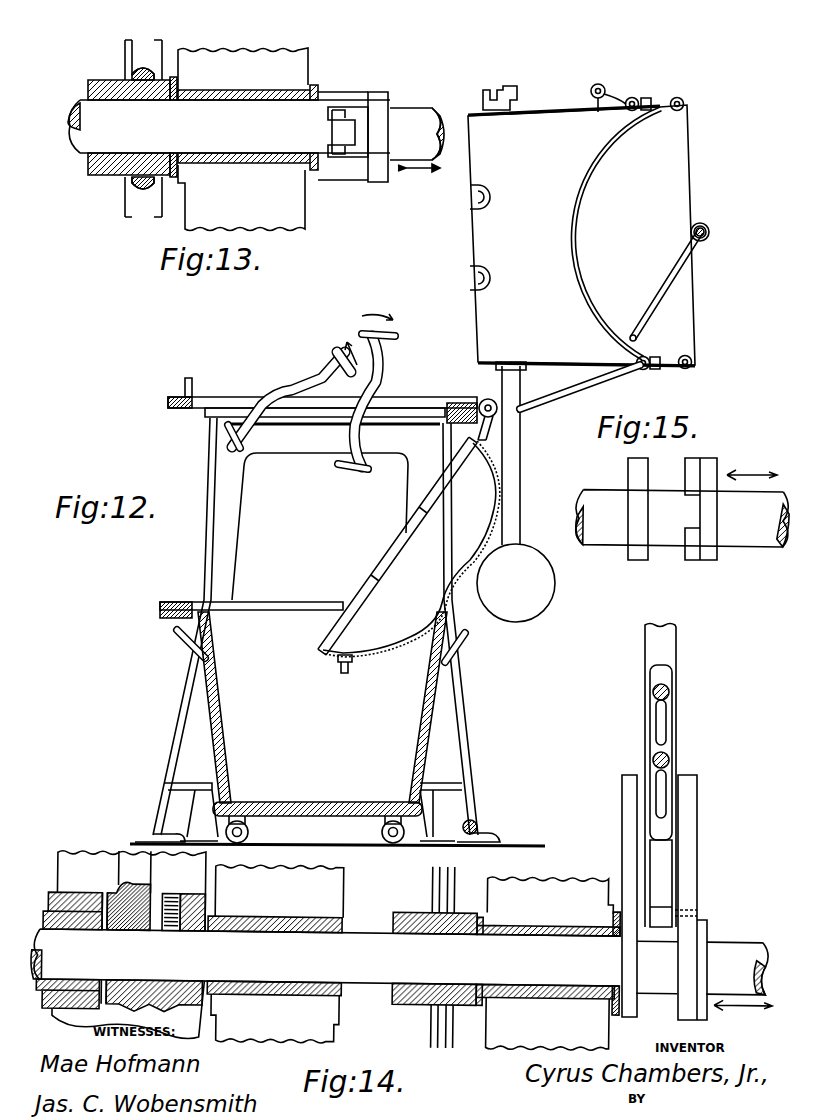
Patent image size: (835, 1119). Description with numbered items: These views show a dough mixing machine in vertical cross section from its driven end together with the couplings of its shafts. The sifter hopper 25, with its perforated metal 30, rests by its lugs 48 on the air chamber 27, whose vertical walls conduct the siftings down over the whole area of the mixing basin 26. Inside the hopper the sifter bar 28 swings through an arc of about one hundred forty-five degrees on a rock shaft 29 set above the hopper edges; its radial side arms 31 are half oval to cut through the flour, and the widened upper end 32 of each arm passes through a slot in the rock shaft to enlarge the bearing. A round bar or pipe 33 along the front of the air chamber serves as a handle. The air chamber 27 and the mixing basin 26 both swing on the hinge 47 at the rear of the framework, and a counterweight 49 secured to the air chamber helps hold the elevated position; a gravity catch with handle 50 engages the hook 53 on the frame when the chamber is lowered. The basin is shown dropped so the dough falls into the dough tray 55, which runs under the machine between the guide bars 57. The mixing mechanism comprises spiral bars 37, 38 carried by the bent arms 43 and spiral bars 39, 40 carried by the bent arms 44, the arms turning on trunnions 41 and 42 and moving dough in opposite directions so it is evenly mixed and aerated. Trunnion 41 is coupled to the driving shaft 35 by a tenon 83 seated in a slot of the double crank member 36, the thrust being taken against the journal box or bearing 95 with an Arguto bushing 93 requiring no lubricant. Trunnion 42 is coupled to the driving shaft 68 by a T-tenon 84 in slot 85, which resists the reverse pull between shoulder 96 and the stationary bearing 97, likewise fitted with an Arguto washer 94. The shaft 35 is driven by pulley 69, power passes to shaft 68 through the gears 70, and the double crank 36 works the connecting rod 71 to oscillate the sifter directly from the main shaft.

In FIG. 15, the sifter hopper 25 is at (631, 188).
In FIG. 12, the mixing basin 26 is at (409, 555).
In FIG. 15, the air chamber 27 is at (581, 235).
In FIG. 15, the sifter bar 28 is at (636, 333).
In FIG. 15, the rock shaft 29 is at (710, 233).
In FIG. 15, the perforated metal 30 is at (580, 222).
In FIG. 15, the side arms 31 is at (673, 272).
In FIG. 15, the upper end of radial arm 32 is at (703, 225).
In FIG. 15, the round bar or pipe 33 is at (598, 84).
In FIG. 14, the driving shaft 35 is at (377, 975).
In FIG. 14, the crank member 36 is at (688, 840).
In FIG. 12, the spiral bar 37 is at (398, 333).
In FIG. 12, the spiral bar 38 is at (354, 476).
In FIG. 12, the spiral bar 39 is at (335, 360).
In FIG. 12, the spiral bar 40 is at (226, 435).
In FIG. 14, the trunnion 41 is at (737, 953).
In FIG. 13, the trunnion 42 is at (410, 118).
In FIG. 12, the spiders or bent arms 43 is at (378, 378).
In FIG. 12, the spiders or bent arms 44 is at (316, 383).
In FIG. 12, the hinge 47 is at (484, 401).
In FIG. 15, the lugs 48 is at (645, 103).
In FIG. 12, the counterweight 49 is at (537, 603).
In FIG. 15, the handle 50 is at (508, 84).
In FIG. 12, the hook 53 is at (183, 385).
In FIG. 12, the dough tray 55 is at (322, 727).
In FIG. 12, the guide bars 57 is at (294, 606).
In FIG. 13, the driving shaft 68 is at (228, 117).
In FIG. 14, the pulley 69 is at (87, 863).
In FIG. 13, the gears 70 is at (140, 58).
In FIG. 14, the gears 70 is at (440, 886).
In FIG. 14, the connecting rod 71 is at (672, 645).
In FIG. 14, the tenon 83 is at (695, 510).
In FIG. 13, the T-tenon 84 is at (335, 125).
In FIG. 13, the slot 85 is at (338, 150).
In FIG. 14, the Arguto bushing or washer 93 is at (615, 905).
In FIG. 13, the Arguto bushing or washer 94 is at (176, 80).
In FIG. 14, the journal box or bearing 95 is at (547, 886).
In FIG. 13, the shoulder 96 is at (157, 183).
In FIG. 13, the stationary bearing or journal box 97 is at (285, 205).